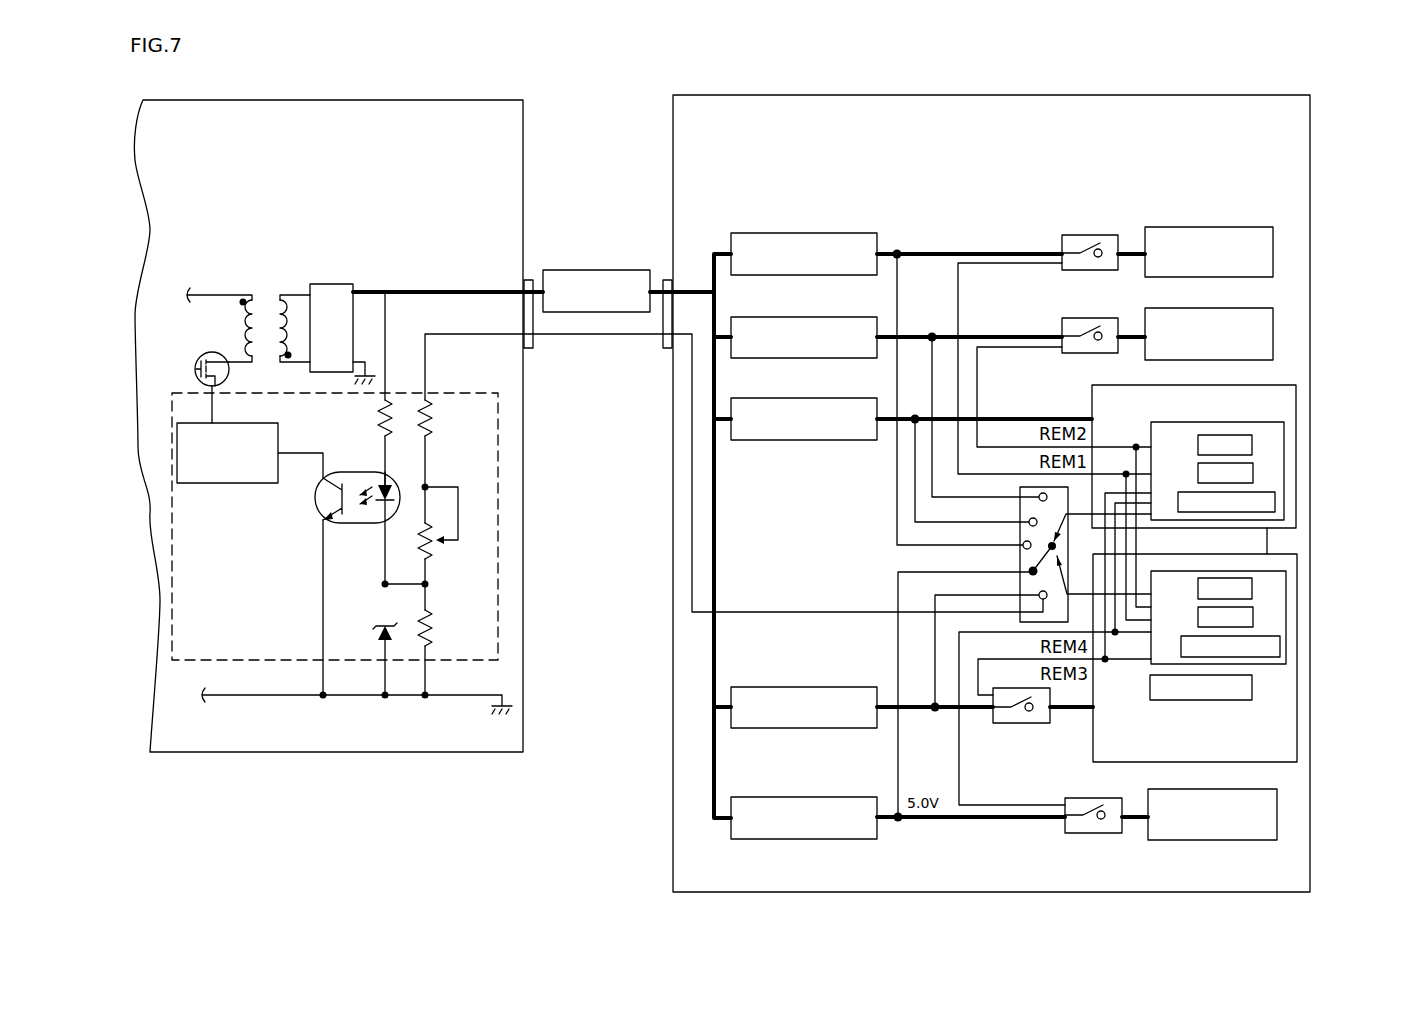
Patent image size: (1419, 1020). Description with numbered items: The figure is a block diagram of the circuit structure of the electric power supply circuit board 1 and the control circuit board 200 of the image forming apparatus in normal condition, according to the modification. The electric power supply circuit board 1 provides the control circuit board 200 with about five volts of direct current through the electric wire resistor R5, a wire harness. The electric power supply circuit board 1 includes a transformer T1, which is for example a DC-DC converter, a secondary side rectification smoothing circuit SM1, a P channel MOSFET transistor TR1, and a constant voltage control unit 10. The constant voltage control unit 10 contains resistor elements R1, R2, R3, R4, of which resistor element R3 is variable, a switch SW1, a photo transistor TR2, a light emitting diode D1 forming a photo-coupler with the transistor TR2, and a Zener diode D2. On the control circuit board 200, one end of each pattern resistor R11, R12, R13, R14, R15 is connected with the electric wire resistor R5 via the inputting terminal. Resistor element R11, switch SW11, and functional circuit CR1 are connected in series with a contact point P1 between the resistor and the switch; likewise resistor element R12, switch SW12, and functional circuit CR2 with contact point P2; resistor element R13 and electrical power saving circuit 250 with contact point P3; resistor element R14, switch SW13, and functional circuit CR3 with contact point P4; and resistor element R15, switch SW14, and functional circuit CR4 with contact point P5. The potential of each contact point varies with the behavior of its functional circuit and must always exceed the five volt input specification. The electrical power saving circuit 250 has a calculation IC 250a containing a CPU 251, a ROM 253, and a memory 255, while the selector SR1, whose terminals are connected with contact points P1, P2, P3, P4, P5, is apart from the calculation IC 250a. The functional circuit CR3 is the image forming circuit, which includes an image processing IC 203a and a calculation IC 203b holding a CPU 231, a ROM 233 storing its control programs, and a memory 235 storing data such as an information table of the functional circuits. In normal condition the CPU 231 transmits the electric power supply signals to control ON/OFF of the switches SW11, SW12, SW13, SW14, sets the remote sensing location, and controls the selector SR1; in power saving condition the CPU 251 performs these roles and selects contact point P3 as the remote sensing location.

The electric power supply circuit board 1 is at (480, 100).
The control circuit board 200 is at (1250, 95).
The constant voltage control unit 10 is at (498, 482).
The electrical power saving circuit 250 is at (1296, 398).
The calculation IC 250a is at (1284, 425).
The CPU 251 is at (1252, 446).
The ROM 253 is at (1253, 474).
The memory 255 is at (1275, 502).
The calculation IC 203b is at (1263, 571).
The CPU 231 is at (1252, 589).
The ROM 233 is at (1253, 617).
The memory 235 is at (1280, 646).
The image processing IC 203a is at (1252, 687).
The functional circuit CR1 is at (1273, 250).
The functional circuit CR2 is at (1273, 339).
The functional circuit CR3 is at (1297, 742).
The functional circuit CR4 is at (1277, 811).
The transformer T1 is at (266, 292).
The secondary side rectification smoothing circuit SM1 is at (333, 284).
The transistor TR1 is at (196, 370).
The transistor TR2 is at (324, 505).
The switch SW1 is at (219, 483).
The resistor element R1 is at (388, 399).
The resistor element R2 is at (433, 419).
The resistor element R3 is at (435, 558).
The resistor element R4 is at (435, 624).
The diode D1 is at (388, 480).
The diode D2 is at (382, 625).
The electric wire resistor R5 is at (609, 270).
The resistor element R11 is at (838, 233).
The resistor element R12 is at (838, 317).
The resistor element R13 is at (839, 398).
The resistor element R14 is at (840, 687).
The resistor element R15 is at (840, 797).
The contact point P1 is at (897, 249).
The contact point P2 is at (932, 332).
The contact point P3 is at (915, 414).
The contact point P4 is at (932, 704).
The contact point P5 is at (900, 822).
The switch SW11 is at (1080, 238).
The switch SW12 is at (1080, 321).
The switch SW13 is at (1013, 719).
The switch SW14 is at (1083, 829).
The selector SR1 is at (1020, 563).